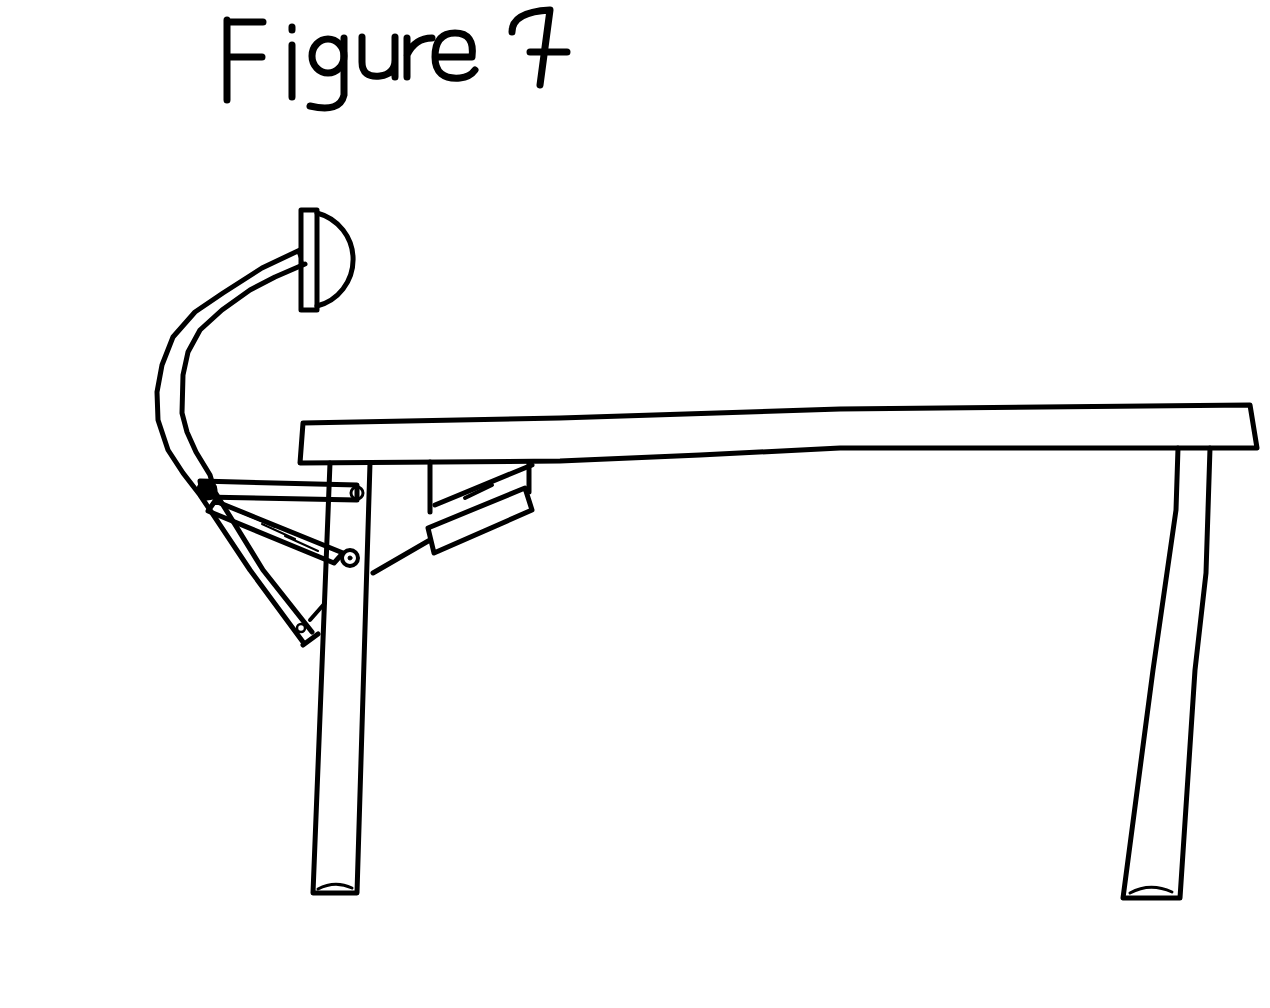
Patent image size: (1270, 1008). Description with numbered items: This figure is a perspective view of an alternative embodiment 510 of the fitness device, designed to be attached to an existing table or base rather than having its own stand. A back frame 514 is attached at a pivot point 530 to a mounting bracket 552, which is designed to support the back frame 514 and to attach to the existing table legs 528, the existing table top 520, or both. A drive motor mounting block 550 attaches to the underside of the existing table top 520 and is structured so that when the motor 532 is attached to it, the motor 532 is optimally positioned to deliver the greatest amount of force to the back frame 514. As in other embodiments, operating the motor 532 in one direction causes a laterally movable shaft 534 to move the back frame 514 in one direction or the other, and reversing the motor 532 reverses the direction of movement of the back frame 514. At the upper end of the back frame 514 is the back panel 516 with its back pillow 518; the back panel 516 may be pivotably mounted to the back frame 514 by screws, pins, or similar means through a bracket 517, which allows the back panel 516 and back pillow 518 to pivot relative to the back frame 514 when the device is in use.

The alternative embodiment 510 is at (918, 262).
The back frame 514 is at (187, 333).
The back panel 516 is at (310, 207).
The bracket 517 is at (297, 250).
The back pillow 518 is at (347, 243).
The existing table top 520 is at (860, 430).
The existing table legs 528 is at (343, 772).
The pivot point 530 is at (200, 493).
The motor 532 is at (482, 527).
The laterally movable shaft 534 is at (387, 568).
The drive motor mounting block 550 is at (458, 476).
The mounting bracket 552 is at (257, 475).